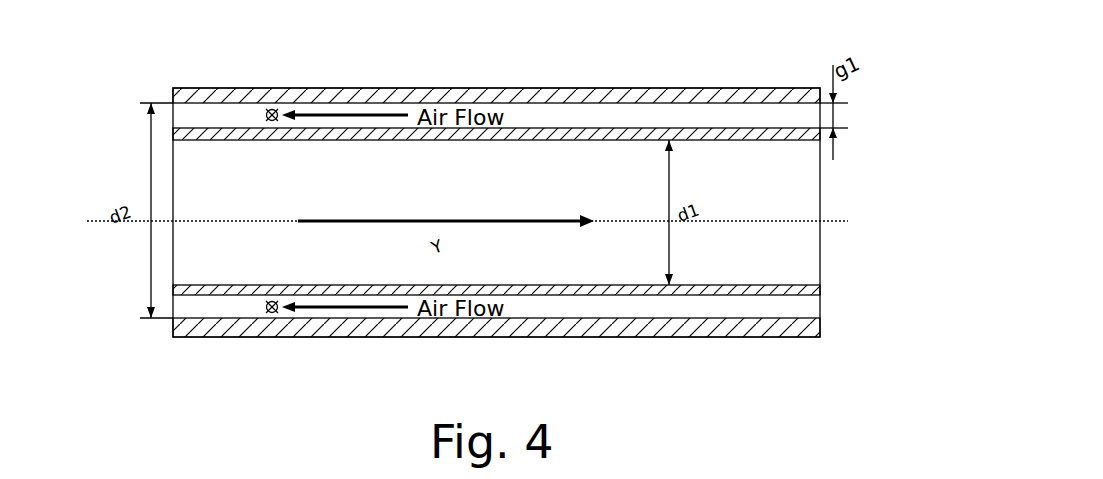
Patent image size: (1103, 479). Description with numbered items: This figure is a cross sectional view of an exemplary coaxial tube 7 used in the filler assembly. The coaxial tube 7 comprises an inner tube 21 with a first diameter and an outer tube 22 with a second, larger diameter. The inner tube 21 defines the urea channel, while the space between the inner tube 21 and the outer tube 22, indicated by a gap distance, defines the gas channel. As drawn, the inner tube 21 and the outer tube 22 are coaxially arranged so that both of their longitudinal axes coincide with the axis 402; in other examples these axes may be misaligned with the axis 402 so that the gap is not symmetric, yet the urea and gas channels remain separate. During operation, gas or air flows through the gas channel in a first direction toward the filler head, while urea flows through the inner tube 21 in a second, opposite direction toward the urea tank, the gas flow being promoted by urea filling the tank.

The coaxial tube 7 is at (261, 354).
The inner tube 21 is at (718, 135).
The outer tube 22 is at (664, 97).
The axis 402 is at (87, 221).